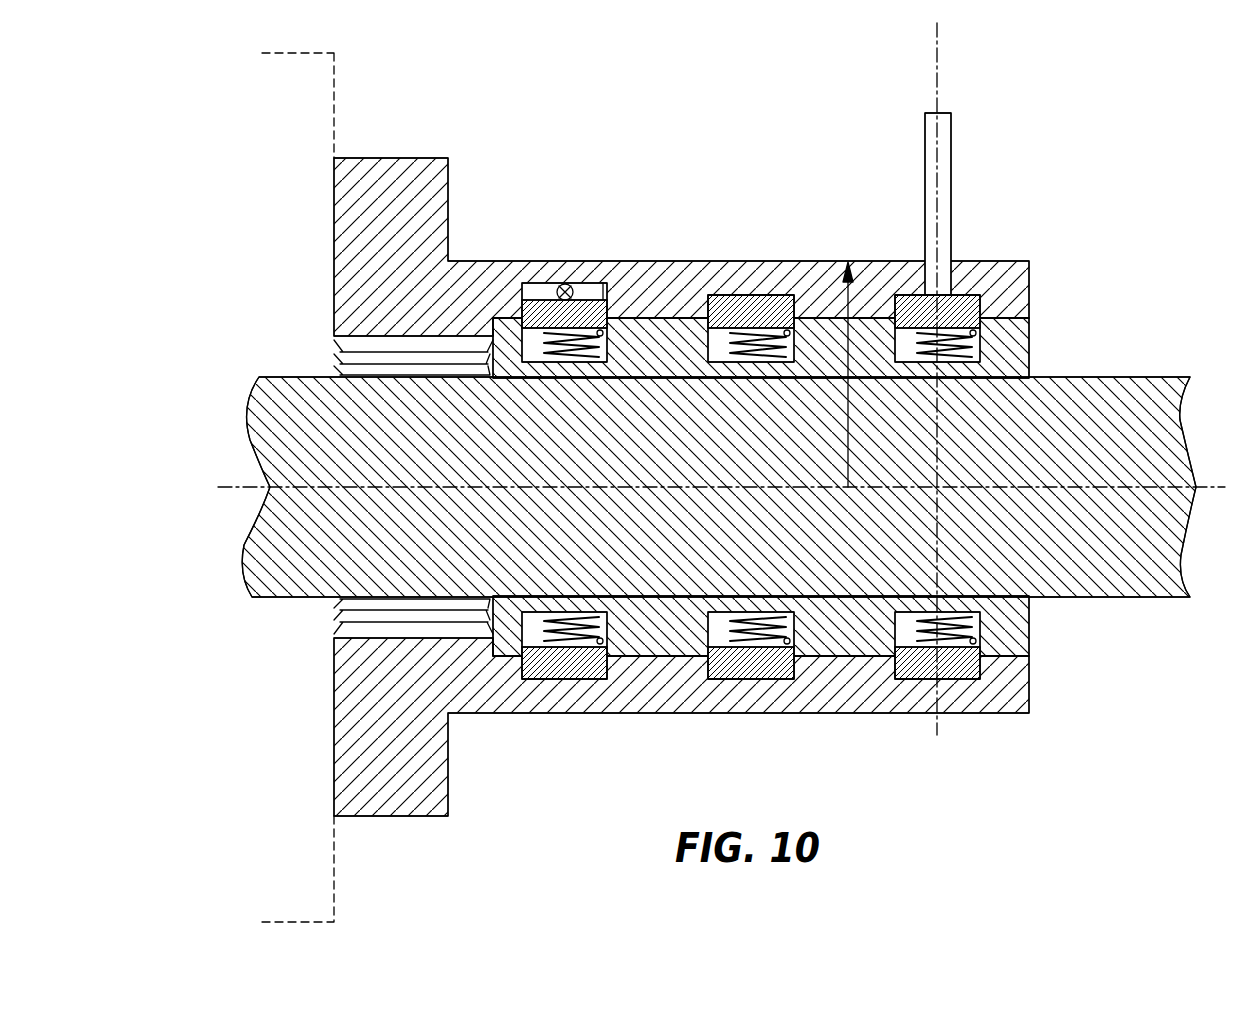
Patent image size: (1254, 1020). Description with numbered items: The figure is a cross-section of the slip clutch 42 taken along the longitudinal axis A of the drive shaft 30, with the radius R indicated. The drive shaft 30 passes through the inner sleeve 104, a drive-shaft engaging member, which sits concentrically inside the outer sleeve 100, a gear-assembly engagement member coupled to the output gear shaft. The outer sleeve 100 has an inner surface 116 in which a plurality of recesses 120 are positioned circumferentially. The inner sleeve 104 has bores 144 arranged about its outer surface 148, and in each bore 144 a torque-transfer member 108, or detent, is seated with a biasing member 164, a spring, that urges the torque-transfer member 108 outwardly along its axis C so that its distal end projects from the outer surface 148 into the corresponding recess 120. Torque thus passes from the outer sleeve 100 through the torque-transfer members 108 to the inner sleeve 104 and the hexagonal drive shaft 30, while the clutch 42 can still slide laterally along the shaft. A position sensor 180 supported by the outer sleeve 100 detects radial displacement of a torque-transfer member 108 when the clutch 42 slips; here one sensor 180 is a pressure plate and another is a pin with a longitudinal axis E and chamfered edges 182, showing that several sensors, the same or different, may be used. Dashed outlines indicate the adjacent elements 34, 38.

The drive shaft 30 is at (295, 412).
The housing 34 is at (592, 487).
The bore 38 is at (285, 133).
The slip clutch 42 is at (574, 108).
The outer sleeve 100 is at (1020, 285).
The inner sleeve 104 is at (1020, 343).
The torque-transfer member 108 is at (766, 409).
The inner surface 116 is at (650, 320).
The recess 120 is at (766, 420).
The bore 144 is at (718, 345).
The outer surface 148 is at (655, 658).
The biasing member 164 is at (766, 436).
The position sensor 180 is at (545, 282).
The chamfered edges 182 is at (944, 293).
The radius R is at (853, 310).
The longitudinal axis A is at (721, 487).
The axis of torque-transfer member C is at (967, 379).
The longitudinal axis of pin E is at (939, 62).